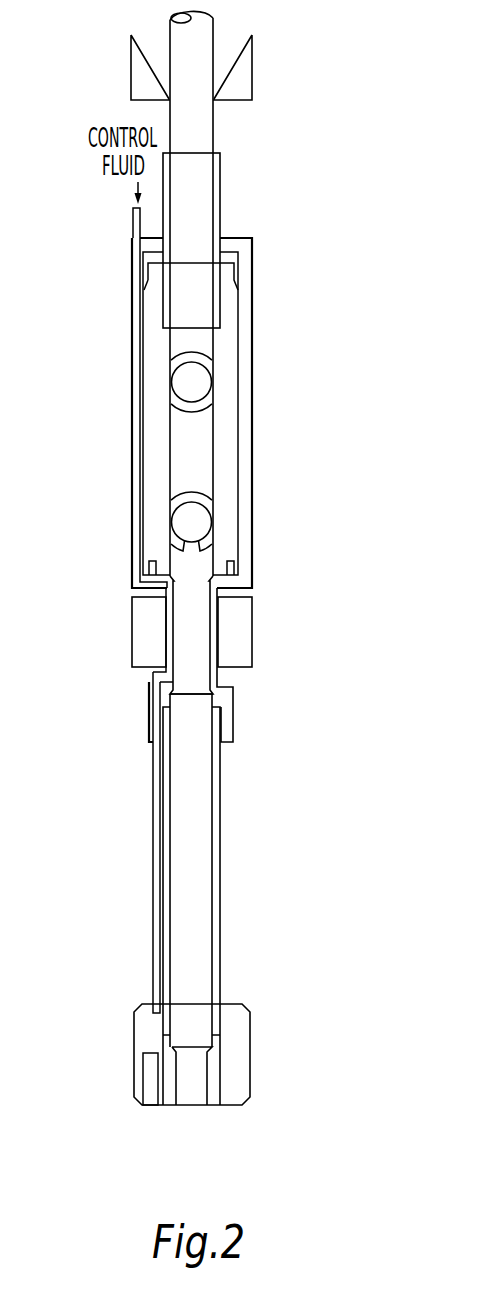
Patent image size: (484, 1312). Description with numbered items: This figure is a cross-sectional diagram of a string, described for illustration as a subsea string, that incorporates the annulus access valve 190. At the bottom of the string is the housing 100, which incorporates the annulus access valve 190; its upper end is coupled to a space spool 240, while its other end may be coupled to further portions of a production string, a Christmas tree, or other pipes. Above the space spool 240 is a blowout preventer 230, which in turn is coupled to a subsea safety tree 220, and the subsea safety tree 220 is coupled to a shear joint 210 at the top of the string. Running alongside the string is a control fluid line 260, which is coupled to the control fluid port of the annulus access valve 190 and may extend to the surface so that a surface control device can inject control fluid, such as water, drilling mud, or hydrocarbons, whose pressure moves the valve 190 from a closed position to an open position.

The shear joint 210 is at (252, 78).
The subsea safety tree 220 is at (252, 420).
The blowout preventer 230 is at (252, 632).
The space spool 240 is at (220, 905).
The control fluid line 260 is at (152, 825).
The housing 100 is at (250, 1052).
The annulus access valve 190 is at (147, 1080).